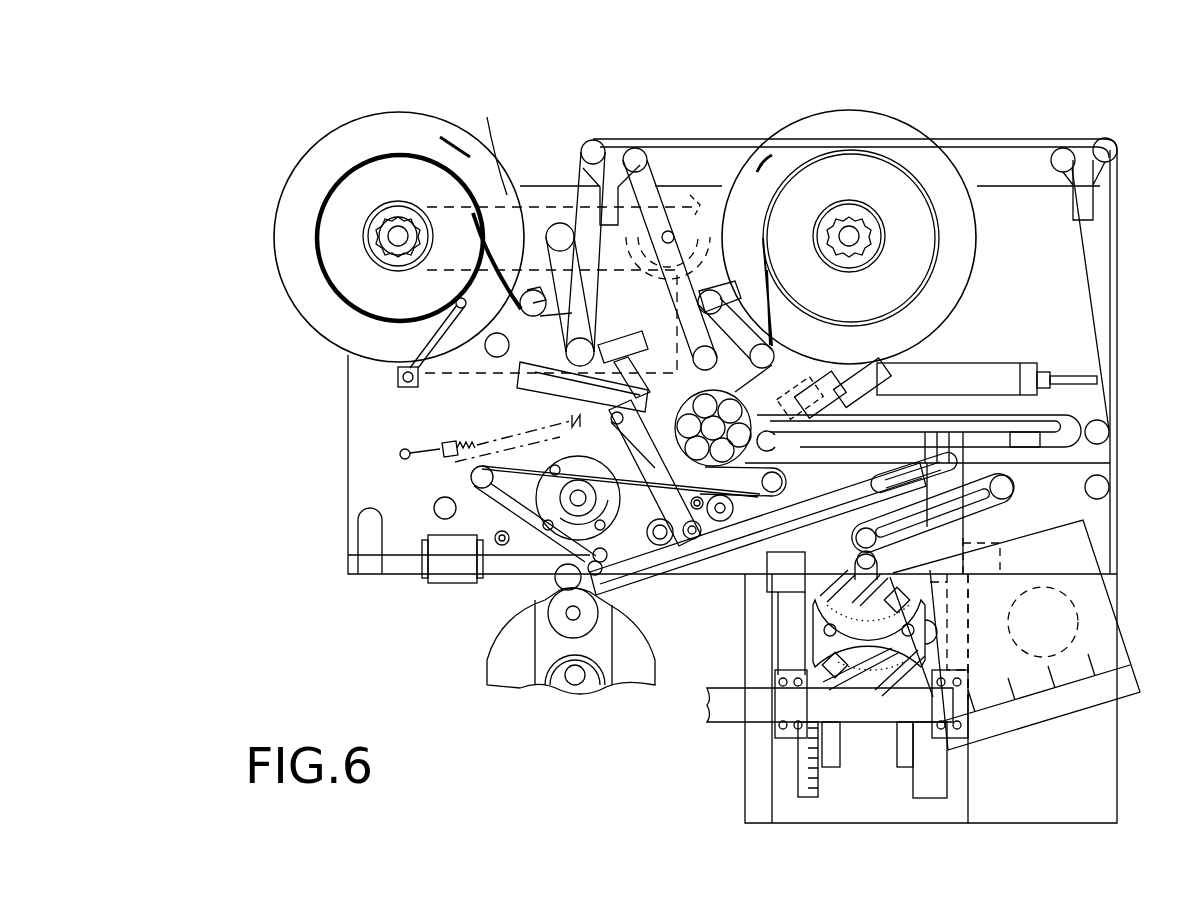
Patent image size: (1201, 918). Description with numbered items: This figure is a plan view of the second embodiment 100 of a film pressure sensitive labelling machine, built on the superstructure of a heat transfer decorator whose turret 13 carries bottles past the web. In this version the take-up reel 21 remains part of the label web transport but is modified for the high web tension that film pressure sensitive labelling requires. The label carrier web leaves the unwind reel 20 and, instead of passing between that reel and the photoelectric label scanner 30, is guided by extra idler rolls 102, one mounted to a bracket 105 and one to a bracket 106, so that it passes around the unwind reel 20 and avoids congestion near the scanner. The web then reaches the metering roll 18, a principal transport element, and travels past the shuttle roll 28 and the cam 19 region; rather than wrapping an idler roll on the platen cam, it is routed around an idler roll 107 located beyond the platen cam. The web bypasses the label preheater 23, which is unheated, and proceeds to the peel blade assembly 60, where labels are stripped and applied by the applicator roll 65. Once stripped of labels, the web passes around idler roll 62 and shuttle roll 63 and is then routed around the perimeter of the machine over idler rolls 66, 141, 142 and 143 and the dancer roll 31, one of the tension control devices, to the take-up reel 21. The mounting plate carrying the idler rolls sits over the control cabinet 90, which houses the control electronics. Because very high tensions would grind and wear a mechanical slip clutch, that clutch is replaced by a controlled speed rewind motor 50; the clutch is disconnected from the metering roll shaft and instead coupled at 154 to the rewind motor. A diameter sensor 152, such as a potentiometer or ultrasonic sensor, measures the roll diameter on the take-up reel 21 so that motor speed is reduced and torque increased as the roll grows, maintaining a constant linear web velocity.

The turret 13 is at (508, 668).
The metering roll 18 is at (716, 451).
The cam 19 is at (488, 352).
The unwind reel 20 is at (852, 120).
The take-up reel 21 is at (385, 155).
The label preheater 23 is at (722, 545).
The shuttle roll 28 is at (352, 528).
The label scanner 30 is at (926, 378).
The dancer roll 31 is at (644, 296).
The controlled speed rewind motor 50 is at (572, 263).
The peel blade assembly 60 is at (638, 578).
The idler roll 62 is at (1015, 487).
The shuttle roll 63 is at (668, 554).
The applicator roll 65 is at (552, 582).
The idler roll 66 is at (1110, 487).
The control cabinet 90 is at (1088, 710).
The second embodiment 100 is at (644, 793).
The idler rolls 102 is at (635, 148).
The bracket 105 is at (1095, 185).
The bracket 106 is at (578, 170).
The idler roll 107 is at (470, 478).
The idler roll 141 is at (1120, 150).
The idler roll 142 is at (590, 140).
The idler roll 143 is at (603, 345).
The diameter sensor 152 is at (393, 388).
The coupling 154 is at (479, 142).